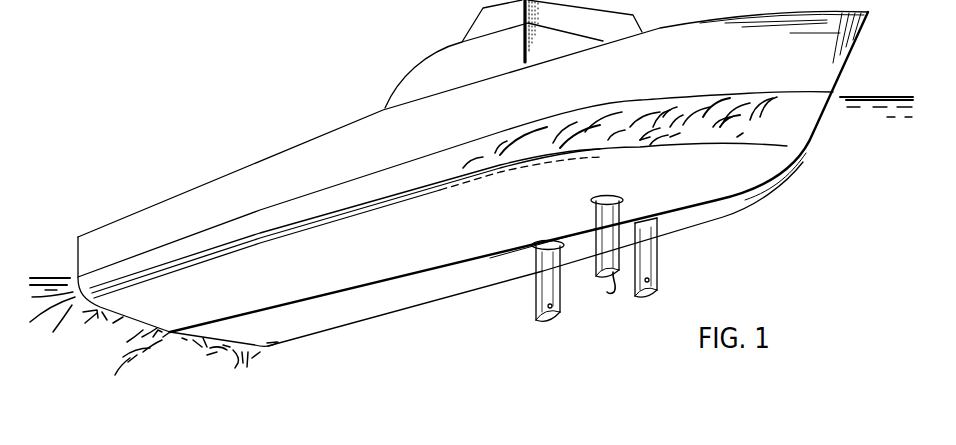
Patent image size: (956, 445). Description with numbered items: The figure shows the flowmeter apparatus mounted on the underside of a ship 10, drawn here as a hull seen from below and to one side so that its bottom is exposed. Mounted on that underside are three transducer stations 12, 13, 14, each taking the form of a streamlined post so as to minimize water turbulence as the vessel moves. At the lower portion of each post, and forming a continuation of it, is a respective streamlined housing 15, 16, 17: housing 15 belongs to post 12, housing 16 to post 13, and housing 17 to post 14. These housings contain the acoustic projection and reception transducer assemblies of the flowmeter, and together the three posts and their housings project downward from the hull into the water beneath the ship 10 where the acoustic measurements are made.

The ship 10 is at (807, 117).
The transducer station 12 is at (647, 258).
The transducer station 13 is at (607, 217).
The transducer station 14 is at (552, 288).
The streamlined housing 15 is at (653, 290).
The streamlined housing 16 is at (604, 289).
The streamlined housing 17 is at (540, 313).